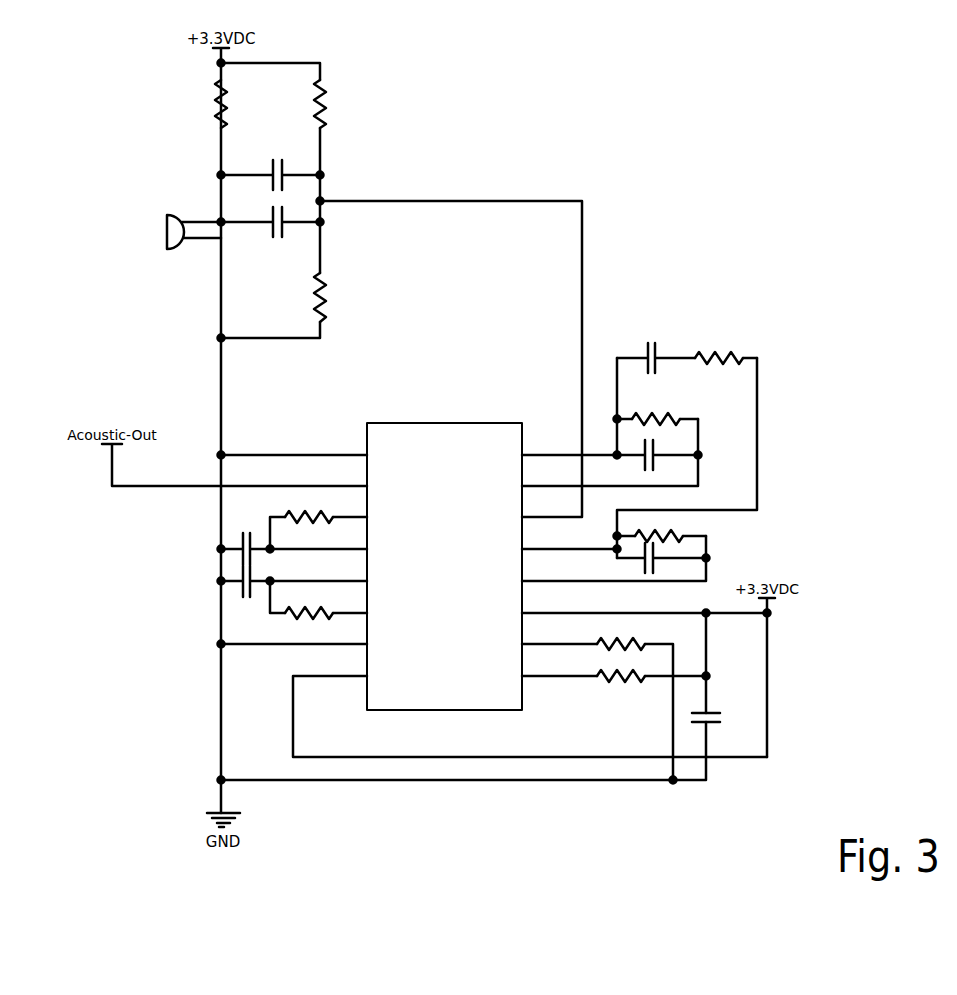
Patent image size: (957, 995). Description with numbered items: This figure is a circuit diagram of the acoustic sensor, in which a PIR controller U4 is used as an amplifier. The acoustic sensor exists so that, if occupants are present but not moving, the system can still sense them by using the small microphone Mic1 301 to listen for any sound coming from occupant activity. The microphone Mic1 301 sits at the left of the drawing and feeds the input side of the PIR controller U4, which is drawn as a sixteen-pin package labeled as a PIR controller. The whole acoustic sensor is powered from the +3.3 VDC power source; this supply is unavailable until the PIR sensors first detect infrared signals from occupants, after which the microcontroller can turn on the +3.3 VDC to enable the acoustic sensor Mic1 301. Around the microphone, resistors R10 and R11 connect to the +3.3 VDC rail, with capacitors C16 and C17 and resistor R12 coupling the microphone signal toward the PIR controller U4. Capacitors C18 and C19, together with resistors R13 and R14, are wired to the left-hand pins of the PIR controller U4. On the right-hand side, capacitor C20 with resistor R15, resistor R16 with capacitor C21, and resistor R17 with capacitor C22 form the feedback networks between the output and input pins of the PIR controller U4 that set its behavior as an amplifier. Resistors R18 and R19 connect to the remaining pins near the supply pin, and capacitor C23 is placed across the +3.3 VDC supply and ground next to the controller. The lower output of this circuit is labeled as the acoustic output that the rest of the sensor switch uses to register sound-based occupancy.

The microphone Mic1 301 is at (152, 221).
The microphone Mic1 is at (161, 250).
The PIR controller U4 is at (446, 580).
The resistor R10 is at (204, 104).
The resistor R11 is at (336, 104).
The resistor R12 is at (341, 297).
The resistor R13 is at (318, 521).
The resistor R14 is at (318, 609).
The resistor R15 is at (726, 357).
The resistor R16 is at (668, 409).
The resistor R17 is at (670, 527).
The resistor R18 is at (645, 635).
The resistor R19 is at (621, 693).
The capacitor C16 is at (270, 155).
The capacitor C17 is at (270, 245).
The capacitor C18 is at (264, 541).
The capacitor C19 is at (265, 590).
The capacitor C20 is at (656, 340).
The capacitor C21 is at (680, 451).
The capacitor C22 is at (710, 558).
The capacitor C23 is at (726, 721).